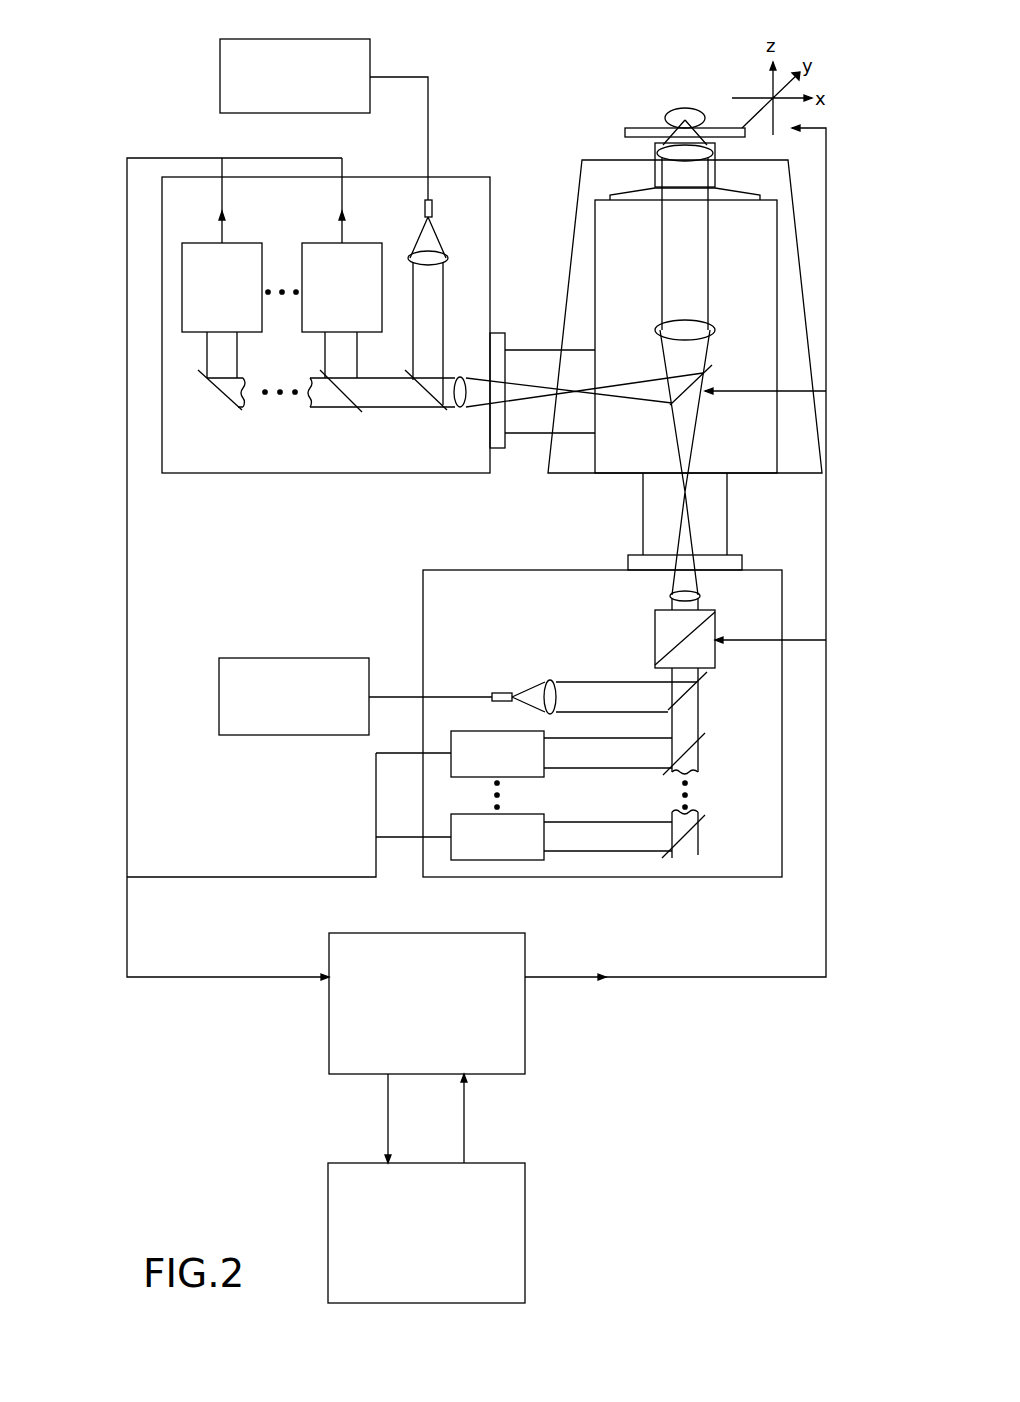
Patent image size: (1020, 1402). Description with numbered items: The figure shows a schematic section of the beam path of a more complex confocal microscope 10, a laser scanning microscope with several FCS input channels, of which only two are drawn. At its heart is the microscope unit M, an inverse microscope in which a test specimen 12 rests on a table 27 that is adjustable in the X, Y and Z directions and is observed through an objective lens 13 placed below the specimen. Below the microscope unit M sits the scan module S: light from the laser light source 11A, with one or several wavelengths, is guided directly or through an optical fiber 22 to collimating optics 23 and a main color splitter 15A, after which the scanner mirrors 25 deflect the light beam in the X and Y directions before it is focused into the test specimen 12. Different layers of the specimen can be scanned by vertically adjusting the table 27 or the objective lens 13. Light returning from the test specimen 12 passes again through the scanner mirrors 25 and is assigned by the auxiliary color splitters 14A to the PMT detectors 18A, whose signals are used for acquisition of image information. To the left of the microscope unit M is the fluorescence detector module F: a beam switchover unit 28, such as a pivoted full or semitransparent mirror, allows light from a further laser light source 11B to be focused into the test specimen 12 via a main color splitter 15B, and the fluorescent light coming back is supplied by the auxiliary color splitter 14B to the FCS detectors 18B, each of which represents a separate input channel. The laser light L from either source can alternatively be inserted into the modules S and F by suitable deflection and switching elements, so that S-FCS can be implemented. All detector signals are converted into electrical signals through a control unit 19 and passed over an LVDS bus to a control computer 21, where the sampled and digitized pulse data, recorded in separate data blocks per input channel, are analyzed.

The confocal microscope 10 is at (160, 113).
The laser light source 11A is at (322, 658).
The further laser light source 11B is at (344, 40).
The test specimen 12 is at (689, 108).
The objective lens 13 is at (658, 154).
The auxiliary color splitters 14A is at (706, 735).
The auxiliary color splitter 14B is at (346, 413).
The main color splitter 15A is at (706, 672).
The main color splitter 15B is at (448, 412).
The PMT detectors 18A is at (538, 813).
The FCS detectors 18B is at (237, 243).
The control unit 19 is at (522, 958).
The control computer 21 is at (525, 1186).
The optical fiber 22 is at (402, 77).
The collimating optics 23 is at (447, 258).
The scanner mirrors 25 is at (714, 612).
The table 27 is at (640, 128).
The beam switchover unit 28 is at (672, 405).
The fluorescence detector module F is at (350, 474).
The laser light L is at (343, 113).
The microscope unit M is at (798, 250).
The scan module S is at (649, 877).